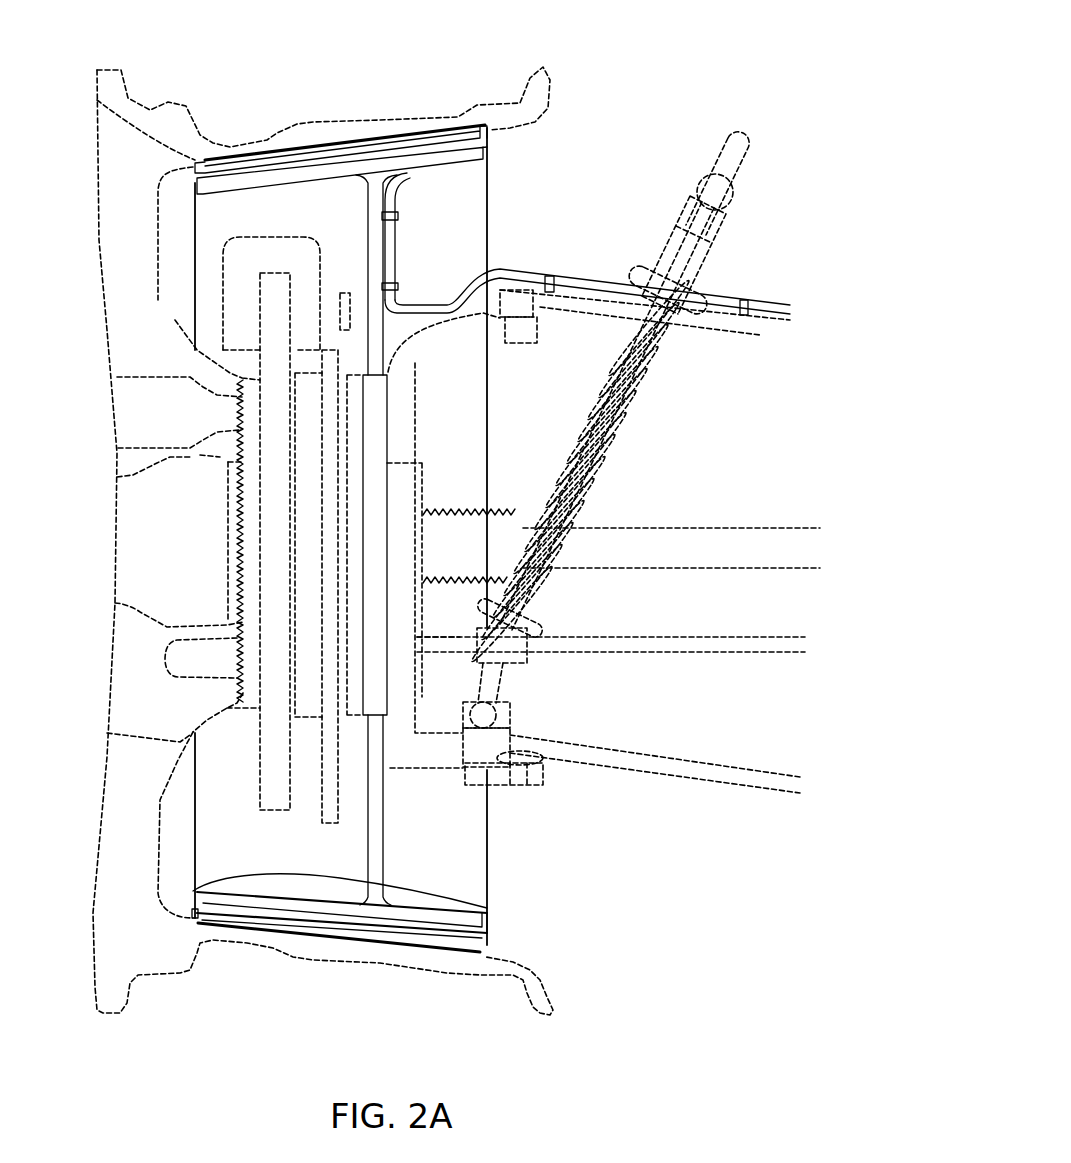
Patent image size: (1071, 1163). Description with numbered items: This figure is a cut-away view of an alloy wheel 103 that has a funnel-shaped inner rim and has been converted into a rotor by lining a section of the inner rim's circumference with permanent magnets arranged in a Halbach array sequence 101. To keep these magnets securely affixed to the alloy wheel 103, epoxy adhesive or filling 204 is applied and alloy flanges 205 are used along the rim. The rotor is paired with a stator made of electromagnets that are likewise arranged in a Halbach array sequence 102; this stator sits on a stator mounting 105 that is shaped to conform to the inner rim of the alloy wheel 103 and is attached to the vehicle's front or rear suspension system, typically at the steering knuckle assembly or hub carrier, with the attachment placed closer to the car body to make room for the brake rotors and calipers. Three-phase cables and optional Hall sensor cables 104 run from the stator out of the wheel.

The permanent magnets arranged in Halbach Array sequence 101 is at (383, 937).
The electromagnets arranged in Halbach Array sequence 102 is at (267, 903).
The alloy wheel 103 is at (273, 142).
The three-phase cables and optional Hall sensor cables 104 is at (418, 310).
The stator mounting 105 is at (432, 863).
The epoxy adhesive or filling 204 is at (285, 150).
The alloy flanges 205 is at (488, 950).